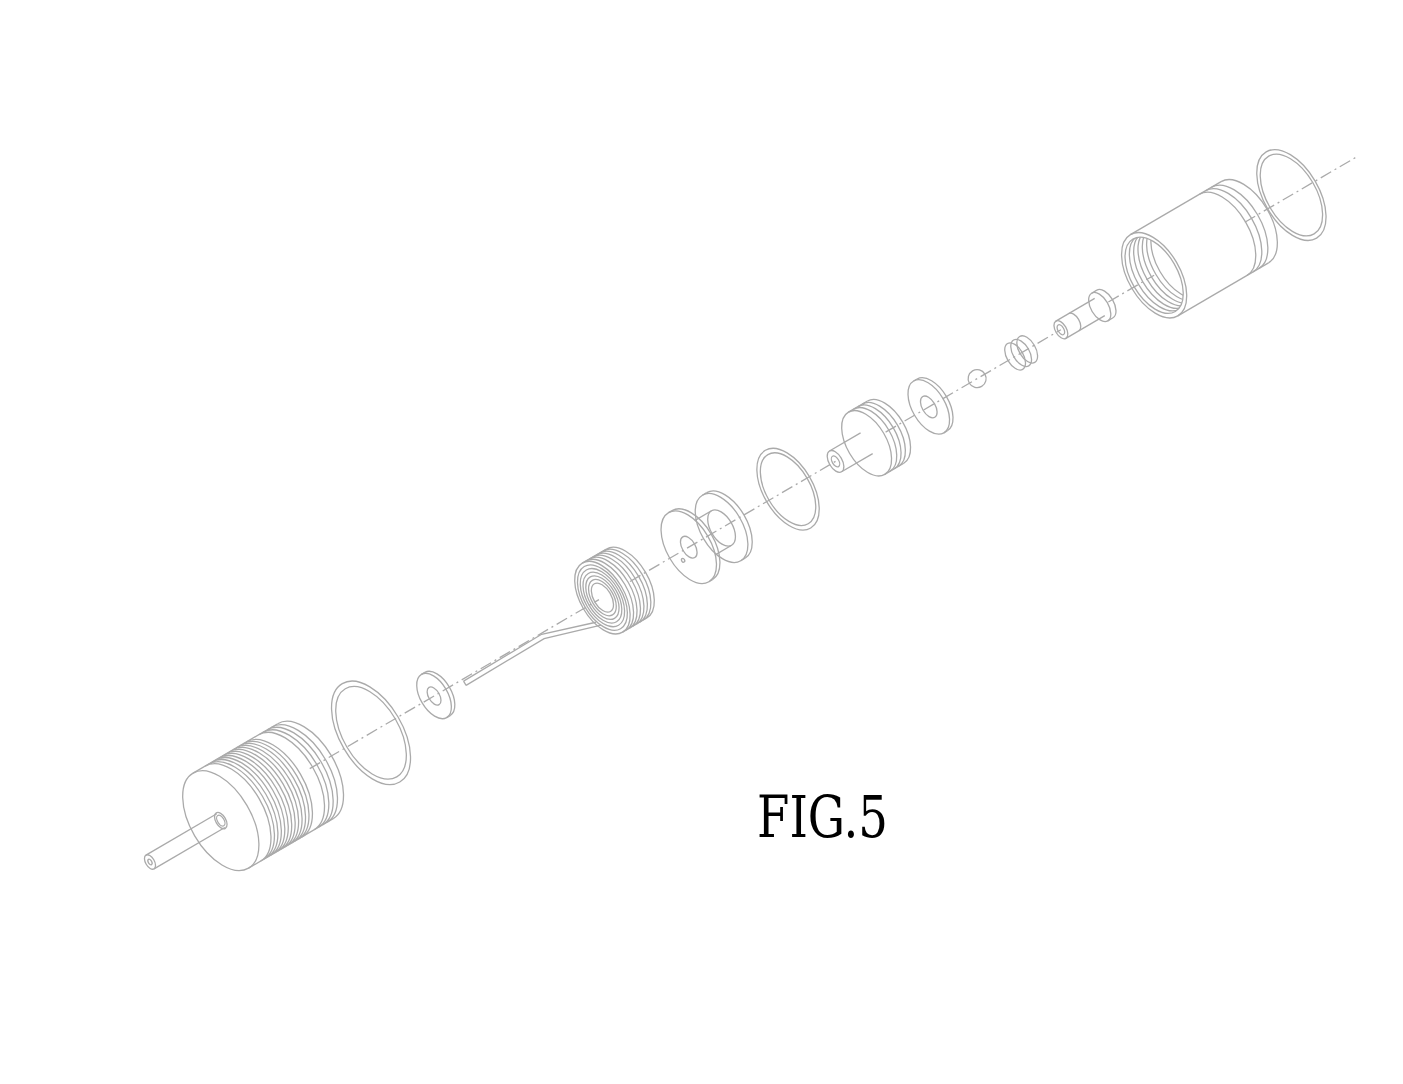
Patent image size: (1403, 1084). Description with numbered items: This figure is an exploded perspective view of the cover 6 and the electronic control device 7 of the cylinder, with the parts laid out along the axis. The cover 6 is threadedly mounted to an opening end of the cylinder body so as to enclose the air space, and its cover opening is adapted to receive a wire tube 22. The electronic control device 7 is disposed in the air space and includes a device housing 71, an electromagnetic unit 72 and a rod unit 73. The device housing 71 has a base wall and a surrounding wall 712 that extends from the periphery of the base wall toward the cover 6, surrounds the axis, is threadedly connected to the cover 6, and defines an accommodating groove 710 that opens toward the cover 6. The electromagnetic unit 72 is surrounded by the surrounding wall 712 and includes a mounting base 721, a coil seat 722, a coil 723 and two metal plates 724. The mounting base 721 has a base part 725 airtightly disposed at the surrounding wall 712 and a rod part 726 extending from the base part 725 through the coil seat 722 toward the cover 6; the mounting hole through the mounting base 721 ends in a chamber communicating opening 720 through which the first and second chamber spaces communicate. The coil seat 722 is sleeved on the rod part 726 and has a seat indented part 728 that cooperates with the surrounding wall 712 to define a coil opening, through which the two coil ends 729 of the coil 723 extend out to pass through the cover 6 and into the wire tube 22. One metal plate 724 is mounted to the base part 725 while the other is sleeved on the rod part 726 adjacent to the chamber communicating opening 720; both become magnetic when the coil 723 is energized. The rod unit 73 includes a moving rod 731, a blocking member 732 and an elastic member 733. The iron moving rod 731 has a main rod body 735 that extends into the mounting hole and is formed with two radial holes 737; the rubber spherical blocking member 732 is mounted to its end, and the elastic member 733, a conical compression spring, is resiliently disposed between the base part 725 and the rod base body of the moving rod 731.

The electronic control device 7 is at (822, 246).
The cover 6 is at (214, 742).
The wire tube 22 is at (165, 850).
The device housing 71 is at (1168, 213).
The accommodating groove 710 is at (1166, 290).
The surrounding wall 712 is at (1220, 278).
The electromagnetic unit 72 is at (879, 277).
The chamber communicating opening 720 is at (837, 474).
The mounting base 721 is at (854, 406).
The coil seat 722 is at (668, 510).
The coil 723 is at (593, 548).
The metal plates 724 is at (415, 663).
The base part 725 is at (882, 470).
The rod part 726 is at (836, 450).
The seat indented part 728 is at (688, 582).
The coil ends 729 is at (501, 667).
The rod unit 73 is at (1047, 197).
The moving rod 731 is at (1065, 315).
The blocking member 732 is at (969, 373).
The elastic member 733 is at (1014, 328).
The main rod body 735 is at (1064, 337).
The radial holes 737 is at (1088, 331).